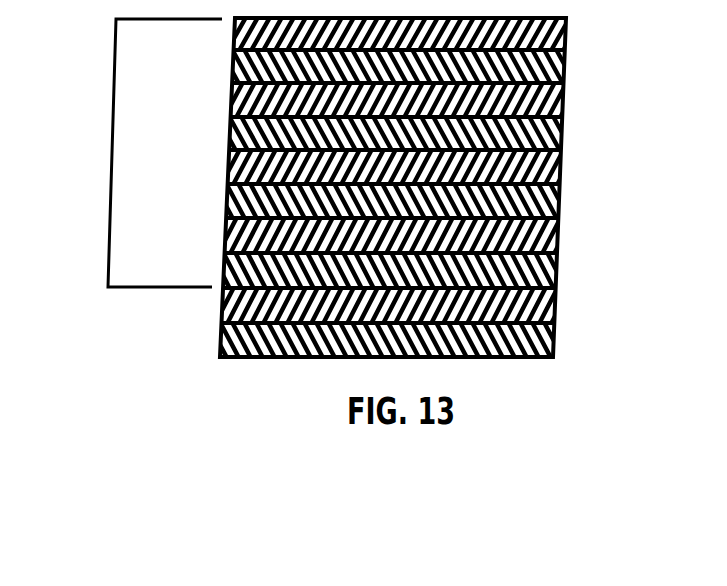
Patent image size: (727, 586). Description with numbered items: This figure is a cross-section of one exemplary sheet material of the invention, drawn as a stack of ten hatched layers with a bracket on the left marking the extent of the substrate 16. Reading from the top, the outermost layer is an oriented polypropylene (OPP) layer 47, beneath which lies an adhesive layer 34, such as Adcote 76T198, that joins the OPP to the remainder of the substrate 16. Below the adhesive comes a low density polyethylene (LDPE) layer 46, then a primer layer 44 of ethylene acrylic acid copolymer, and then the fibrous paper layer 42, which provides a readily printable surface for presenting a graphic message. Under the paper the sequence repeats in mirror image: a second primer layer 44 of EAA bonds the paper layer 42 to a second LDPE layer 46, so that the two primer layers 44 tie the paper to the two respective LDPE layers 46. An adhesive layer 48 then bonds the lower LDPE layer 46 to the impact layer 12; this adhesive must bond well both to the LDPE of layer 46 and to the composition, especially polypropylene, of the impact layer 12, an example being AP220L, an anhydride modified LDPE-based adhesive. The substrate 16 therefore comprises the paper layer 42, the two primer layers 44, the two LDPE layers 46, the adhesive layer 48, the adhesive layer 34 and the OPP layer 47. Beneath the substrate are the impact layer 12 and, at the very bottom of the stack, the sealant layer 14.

The oriented polypropylene layer 47 is at (566, 38).
The adhesive layer 34 is at (566, 70).
The low density polyethylene layer 46 is at (563, 112).
The primer layer 44 is at (561, 145).
The paper layer 42 is at (560, 180).
The adhesive layer 48 is at (556, 272).
The impact layer 12 is at (555, 318).
The sealant layer 14 is at (555, 342).
The substrate 16 is at (113, 172).